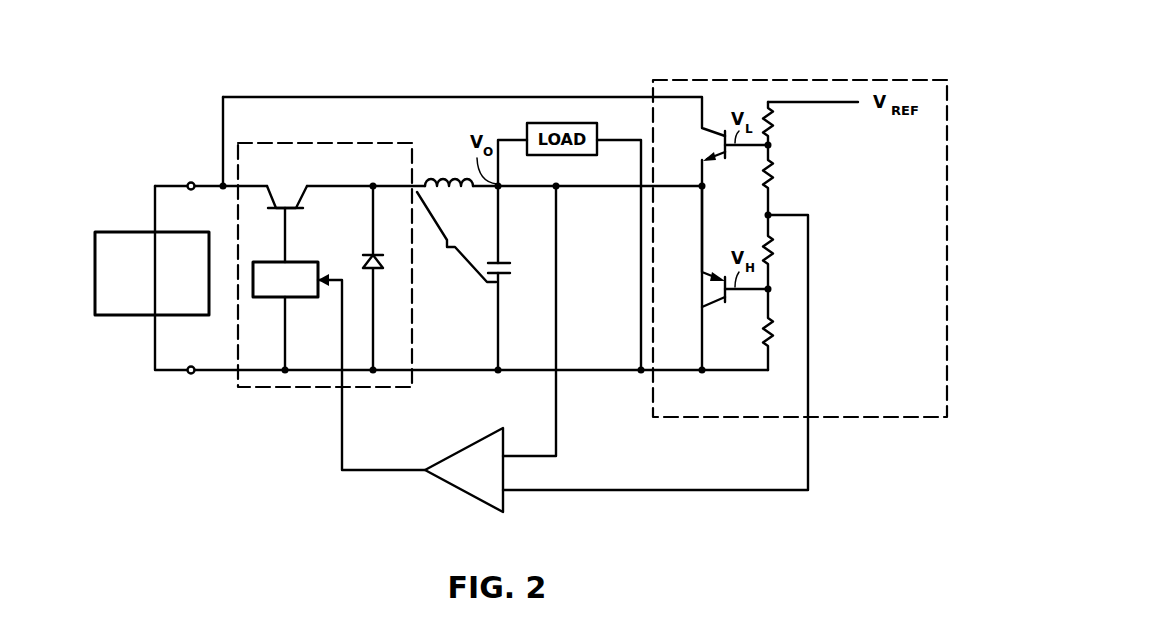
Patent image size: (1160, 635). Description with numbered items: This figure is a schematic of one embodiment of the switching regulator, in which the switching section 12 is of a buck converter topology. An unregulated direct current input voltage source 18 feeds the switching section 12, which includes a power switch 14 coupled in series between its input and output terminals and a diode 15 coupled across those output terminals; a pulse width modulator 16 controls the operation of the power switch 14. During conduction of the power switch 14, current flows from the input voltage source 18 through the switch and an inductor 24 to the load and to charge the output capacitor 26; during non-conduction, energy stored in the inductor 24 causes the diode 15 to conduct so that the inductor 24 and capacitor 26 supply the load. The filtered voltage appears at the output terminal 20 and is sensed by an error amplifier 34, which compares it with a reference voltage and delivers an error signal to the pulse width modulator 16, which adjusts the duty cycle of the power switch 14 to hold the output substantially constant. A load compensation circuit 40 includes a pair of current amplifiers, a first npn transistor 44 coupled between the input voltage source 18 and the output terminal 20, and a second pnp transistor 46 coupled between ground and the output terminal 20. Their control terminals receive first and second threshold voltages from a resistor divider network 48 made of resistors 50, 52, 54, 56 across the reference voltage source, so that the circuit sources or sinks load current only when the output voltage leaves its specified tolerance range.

The switching section 12 is at (350, 143).
The power switch 14 is at (280, 192).
The diode 15 is at (358, 262).
The pulse width modulator 16 is at (300, 262).
The input voltage source 18 is at (135, 232).
The output terminal 20 is at (502, 185).
The inductor 24 is at (458, 178).
The capacitor 26 is at (487, 262).
The error amplifier 34 is at (488, 435).
The load compensation circuit 40 is at (775, 80).
The first transistor 44 is at (718, 144).
The second transistor 46 is at (715, 293).
The resistor divider network 48 is at (792, 201).
The resistor 50 is at (784, 123).
The resistor 52 is at (784, 180).
The resistor 54 is at (781, 252).
The resistor 56 is at (781, 329).